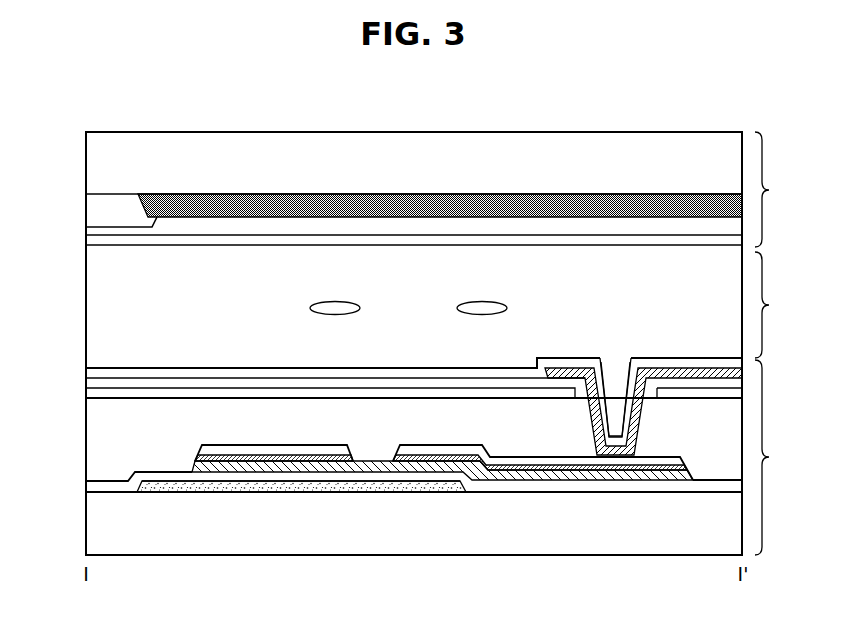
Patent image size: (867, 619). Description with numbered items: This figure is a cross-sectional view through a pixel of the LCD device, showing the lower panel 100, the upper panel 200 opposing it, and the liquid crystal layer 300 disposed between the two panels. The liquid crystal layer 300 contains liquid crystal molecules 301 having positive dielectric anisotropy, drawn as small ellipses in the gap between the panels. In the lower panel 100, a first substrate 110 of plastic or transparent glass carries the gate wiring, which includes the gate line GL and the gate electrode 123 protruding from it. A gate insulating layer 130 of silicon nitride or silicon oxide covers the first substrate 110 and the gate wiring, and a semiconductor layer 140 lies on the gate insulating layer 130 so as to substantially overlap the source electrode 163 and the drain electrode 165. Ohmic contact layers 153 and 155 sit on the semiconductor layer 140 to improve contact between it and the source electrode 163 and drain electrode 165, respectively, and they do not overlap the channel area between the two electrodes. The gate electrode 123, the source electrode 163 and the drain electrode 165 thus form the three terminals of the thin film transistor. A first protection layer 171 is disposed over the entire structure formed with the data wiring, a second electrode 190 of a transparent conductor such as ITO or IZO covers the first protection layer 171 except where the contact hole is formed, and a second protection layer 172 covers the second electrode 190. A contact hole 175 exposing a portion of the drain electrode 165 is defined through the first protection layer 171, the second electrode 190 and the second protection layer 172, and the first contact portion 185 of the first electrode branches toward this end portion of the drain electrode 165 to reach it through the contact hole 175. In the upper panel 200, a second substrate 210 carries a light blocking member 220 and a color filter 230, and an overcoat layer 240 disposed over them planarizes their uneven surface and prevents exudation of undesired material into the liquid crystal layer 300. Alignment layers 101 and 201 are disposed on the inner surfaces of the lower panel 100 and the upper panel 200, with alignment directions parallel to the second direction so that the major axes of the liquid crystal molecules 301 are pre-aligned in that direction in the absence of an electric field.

The lower panel 100 is at (784, 457).
The alignment layer 101 is at (707, 364).
The first substrate 110 is at (217, 532).
The gate electrode 123 is at (388, 488).
The gate insulating layer 130 is at (700, 487).
The semiconductor layer 140 is at (433, 468).
The ohmic contact layer 153 is at (327, 458).
The ohmic contact layer 155 is at (450, 460).
The source electrode 163 is at (268, 448).
The drain electrode 165 is at (640, 460).
The first protection layer 171 is at (97, 444).
The second protection layer 172 is at (665, 371).
The contact hole 175 is at (620, 374).
The first contact portion 185 is at (565, 368).
The second electrode 190 is at (92, 396).
The gate line GL is at (148, 490).
The upper panel 200 is at (784, 189).
The alignment layer 201 is at (313, 243).
The second substrate 210 is at (415, 158).
The light blocking member 220 is at (641, 207).
The color filter 230 is at (115, 212).
The overcoat layer 240 is at (217, 232).
The liquid crystal layer 300 is at (784, 305).
The liquid crystal molecules 301 is at (477, 303).